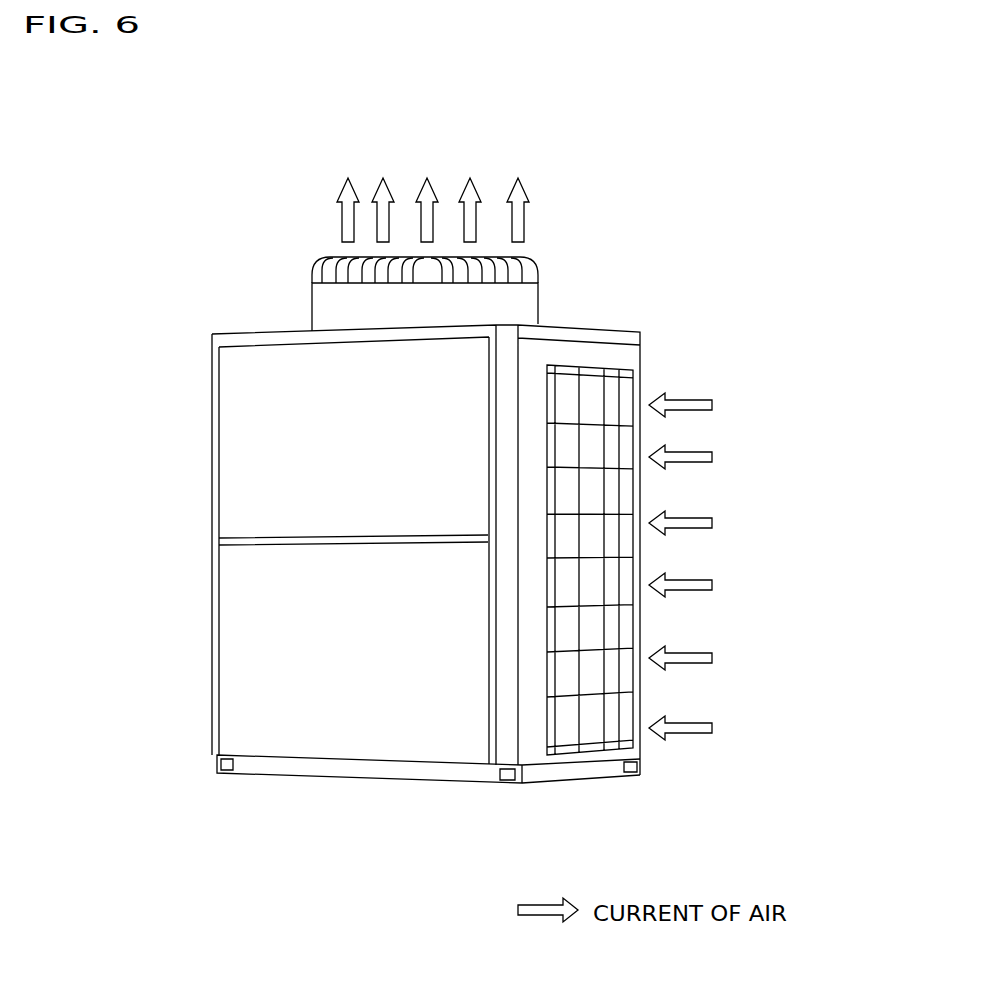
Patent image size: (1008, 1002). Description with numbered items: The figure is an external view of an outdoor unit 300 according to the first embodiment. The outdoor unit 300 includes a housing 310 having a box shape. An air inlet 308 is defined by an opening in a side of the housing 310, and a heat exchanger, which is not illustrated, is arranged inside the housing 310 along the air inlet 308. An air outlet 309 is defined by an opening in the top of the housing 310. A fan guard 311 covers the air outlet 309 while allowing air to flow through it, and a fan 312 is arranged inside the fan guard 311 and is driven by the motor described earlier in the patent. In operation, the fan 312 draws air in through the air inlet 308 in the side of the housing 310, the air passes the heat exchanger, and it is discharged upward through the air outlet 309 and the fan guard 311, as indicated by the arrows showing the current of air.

The outdoor unit 300 is at (263, 297).
The air inlet 308 is at (585, 730).
The air outlet 309 is at (330, 247).
The housing 310 is at (264, 423).
The fan guard 311 is at (537, 270).
The fan 312 is at (465, 270).